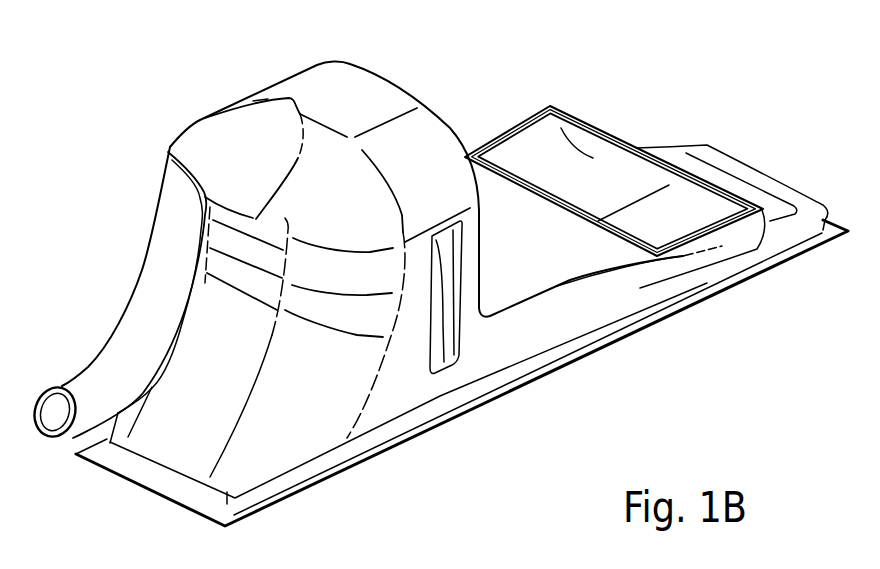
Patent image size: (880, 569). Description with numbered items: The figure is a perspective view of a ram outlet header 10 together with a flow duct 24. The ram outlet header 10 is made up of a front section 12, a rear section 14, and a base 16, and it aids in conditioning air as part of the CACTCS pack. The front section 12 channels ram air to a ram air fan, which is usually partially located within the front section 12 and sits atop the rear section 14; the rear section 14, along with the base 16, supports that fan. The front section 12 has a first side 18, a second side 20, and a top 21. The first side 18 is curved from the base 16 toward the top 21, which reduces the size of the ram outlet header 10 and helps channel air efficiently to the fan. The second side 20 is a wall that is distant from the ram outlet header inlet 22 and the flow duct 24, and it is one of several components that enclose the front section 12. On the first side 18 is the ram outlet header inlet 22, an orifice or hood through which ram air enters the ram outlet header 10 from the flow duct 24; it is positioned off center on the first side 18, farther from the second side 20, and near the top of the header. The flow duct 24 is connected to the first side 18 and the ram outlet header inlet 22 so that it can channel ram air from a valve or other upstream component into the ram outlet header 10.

The ram outlet header 10 is at (438, 285).
The front section 12 is at (241, 67).
The rear section 14 is at (614, 160).
The base 16 is at (300, 478).
The first side 18 is at (203, 373).
The second side 20 is at (410, 333).
The top 21 is at (352, 93).
The ram outlet header inlet 22 is at (182, 148).
The flow duct 24 is at (163, 268).